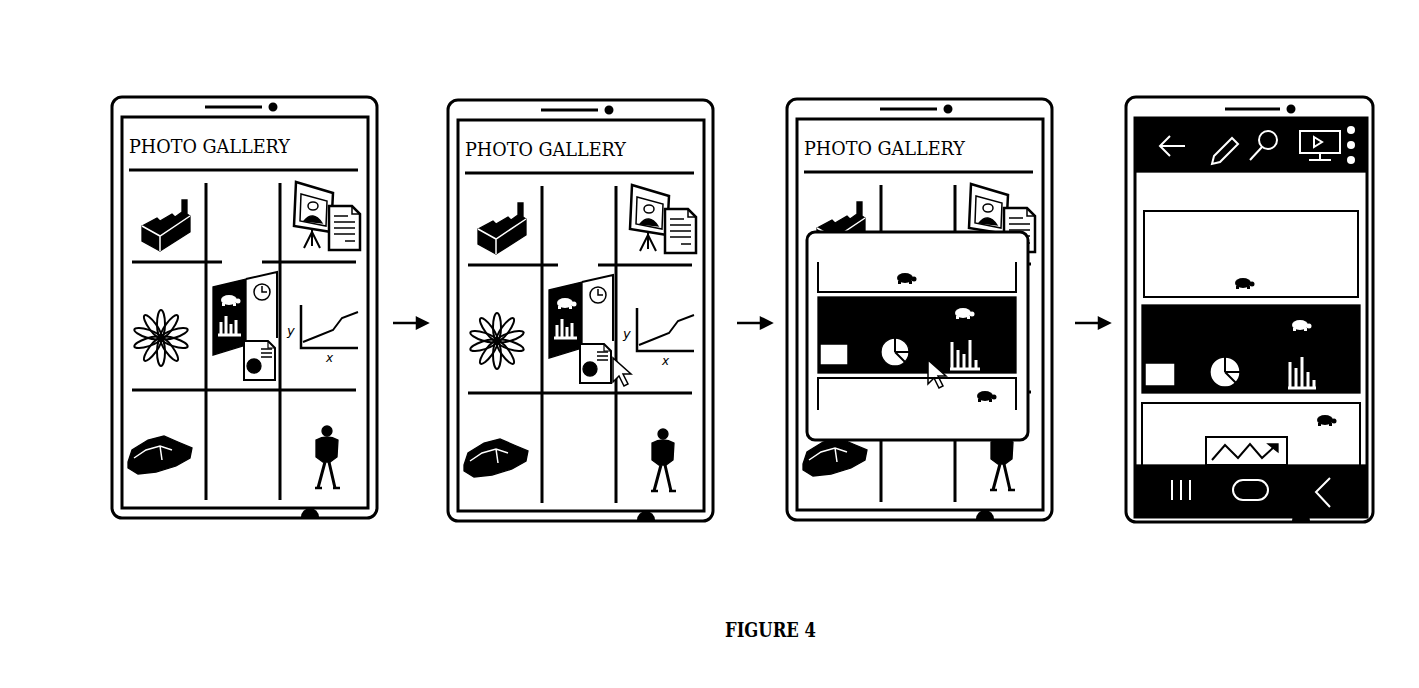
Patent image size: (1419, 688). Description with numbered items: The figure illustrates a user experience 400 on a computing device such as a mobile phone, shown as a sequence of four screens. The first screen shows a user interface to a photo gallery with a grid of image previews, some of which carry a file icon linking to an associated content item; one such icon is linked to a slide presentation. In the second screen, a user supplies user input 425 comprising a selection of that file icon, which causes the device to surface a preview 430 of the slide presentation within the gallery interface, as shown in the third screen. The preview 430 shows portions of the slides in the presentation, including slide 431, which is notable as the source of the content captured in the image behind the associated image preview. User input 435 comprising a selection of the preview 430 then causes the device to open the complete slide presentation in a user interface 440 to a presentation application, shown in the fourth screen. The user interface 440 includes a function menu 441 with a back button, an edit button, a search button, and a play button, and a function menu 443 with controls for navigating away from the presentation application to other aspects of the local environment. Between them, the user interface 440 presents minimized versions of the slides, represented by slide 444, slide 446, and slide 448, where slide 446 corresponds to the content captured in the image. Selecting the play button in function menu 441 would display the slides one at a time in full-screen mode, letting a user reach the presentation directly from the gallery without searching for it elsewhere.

The user experience 400 is at (127, 37).
The user input 425 is at (651, 373).
The preview 430 is at (917, 357).
The slide 431 is at (1010, 337).
The user input 435 is at (917, 401).
The user interface 440 is at (1356, 199).
The function menu 441 is at (1178, 176).
The function menu 443 is at (1196, 462).
The slide 444 is at (1350, 275).
The slide 446 is at (1350, 351).
The slide 448 is at (1251, 434).